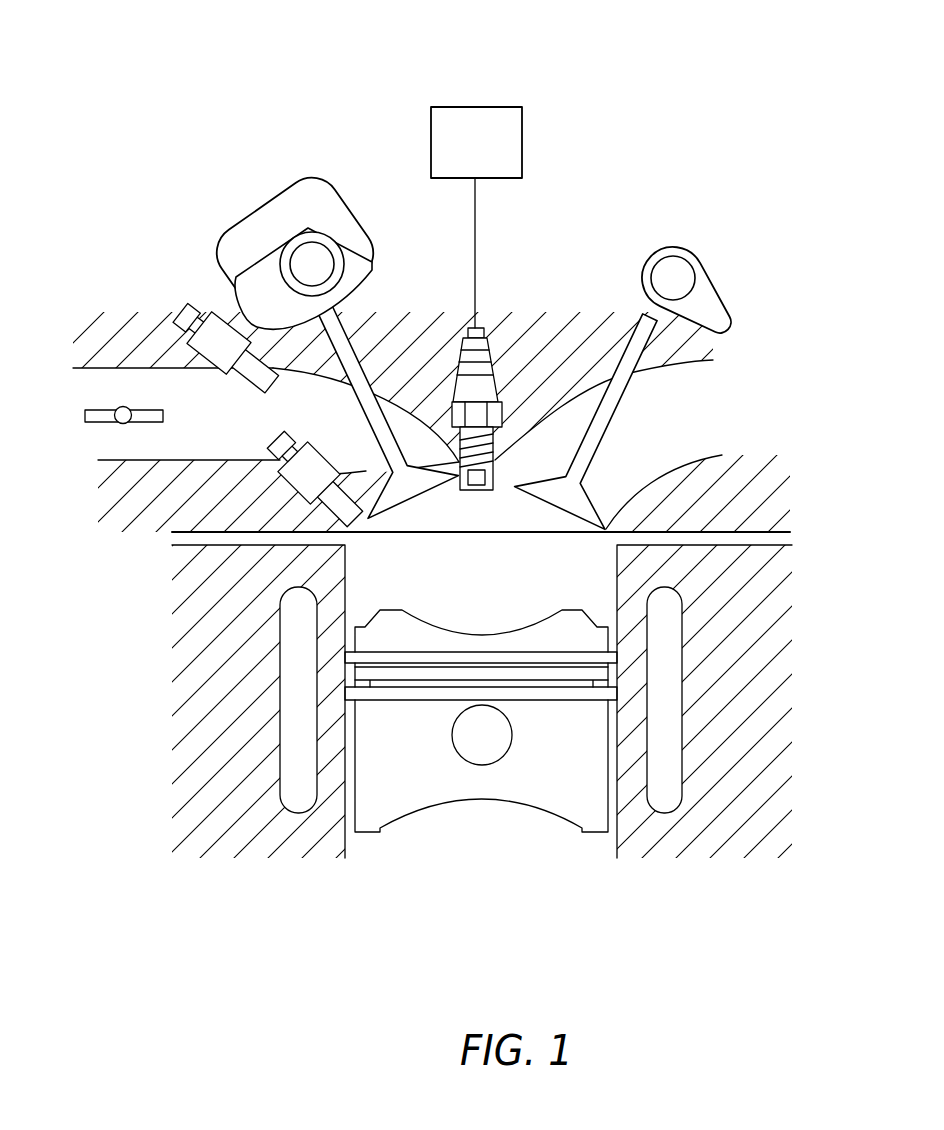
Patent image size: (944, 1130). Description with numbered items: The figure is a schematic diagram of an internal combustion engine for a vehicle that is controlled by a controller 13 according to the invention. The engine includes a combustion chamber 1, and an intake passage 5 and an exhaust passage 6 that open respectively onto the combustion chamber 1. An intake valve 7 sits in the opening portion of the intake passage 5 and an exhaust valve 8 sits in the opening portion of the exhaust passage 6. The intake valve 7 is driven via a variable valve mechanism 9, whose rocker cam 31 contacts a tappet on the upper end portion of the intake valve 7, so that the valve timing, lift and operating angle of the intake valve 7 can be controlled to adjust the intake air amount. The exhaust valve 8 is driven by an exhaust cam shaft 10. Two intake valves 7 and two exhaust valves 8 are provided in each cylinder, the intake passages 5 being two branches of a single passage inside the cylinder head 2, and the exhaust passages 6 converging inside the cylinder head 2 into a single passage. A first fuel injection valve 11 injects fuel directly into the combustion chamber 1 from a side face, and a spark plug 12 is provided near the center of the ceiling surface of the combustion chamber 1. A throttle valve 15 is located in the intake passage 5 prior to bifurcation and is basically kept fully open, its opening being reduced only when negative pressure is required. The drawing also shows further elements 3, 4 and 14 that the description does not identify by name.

The combustion chamber 1 is at (467, 520).
The cylinder head 2 is at (729, 520).
The cylinder block 3 is at (729, 678).
The piston 4 is at (558, 782).
The intake passage 5 is at (185, 427).
The exhaust passage 6 is at (720, 420).
The intake valve 7 is at (348, 349).
The exhaust valve 8 is at (629, 338).
The variable valve mechanism 9 is at (295, 217).
The exhaust cam shaft 10 is at (668, 248).
The first fuel injection valve 11 is at (416, 457).
The spark plug 12 is at (497, 373).
The controller 13 is at (499, 114).
The fuel injector 14 is at (213, 330).
The throttle valve 15 is at (107, 413).
The rocker cam 31 is at (245, 283).